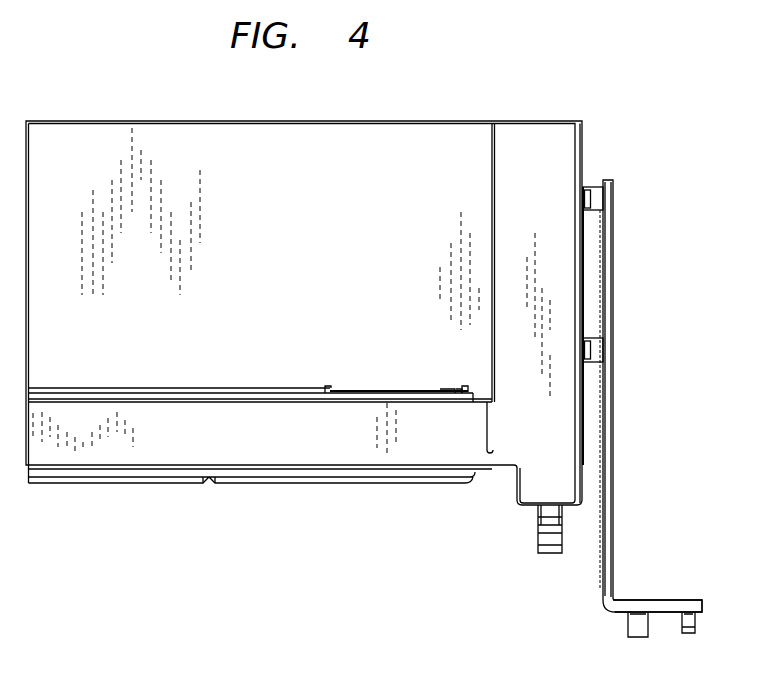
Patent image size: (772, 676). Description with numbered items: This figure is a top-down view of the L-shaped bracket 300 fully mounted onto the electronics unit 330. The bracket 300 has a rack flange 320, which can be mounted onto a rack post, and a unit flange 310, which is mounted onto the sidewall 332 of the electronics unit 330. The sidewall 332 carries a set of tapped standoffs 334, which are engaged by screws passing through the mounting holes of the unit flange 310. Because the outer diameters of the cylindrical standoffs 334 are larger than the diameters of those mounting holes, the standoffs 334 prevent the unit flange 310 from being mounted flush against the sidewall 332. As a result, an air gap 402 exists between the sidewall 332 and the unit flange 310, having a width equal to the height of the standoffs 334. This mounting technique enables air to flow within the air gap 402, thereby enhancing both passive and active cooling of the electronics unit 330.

The L-shaped bracket 300 is at (632, 419).
The unit flange 310 is at (607, 284).
The rack flange 320 is at (660, 602).
The electronics unit 330 is at (322, 491).
The sidewall 332 is at (583, 233).
The tapped standoffs 334 is at (596, 199).
The air gap 402 is at (594, 498).